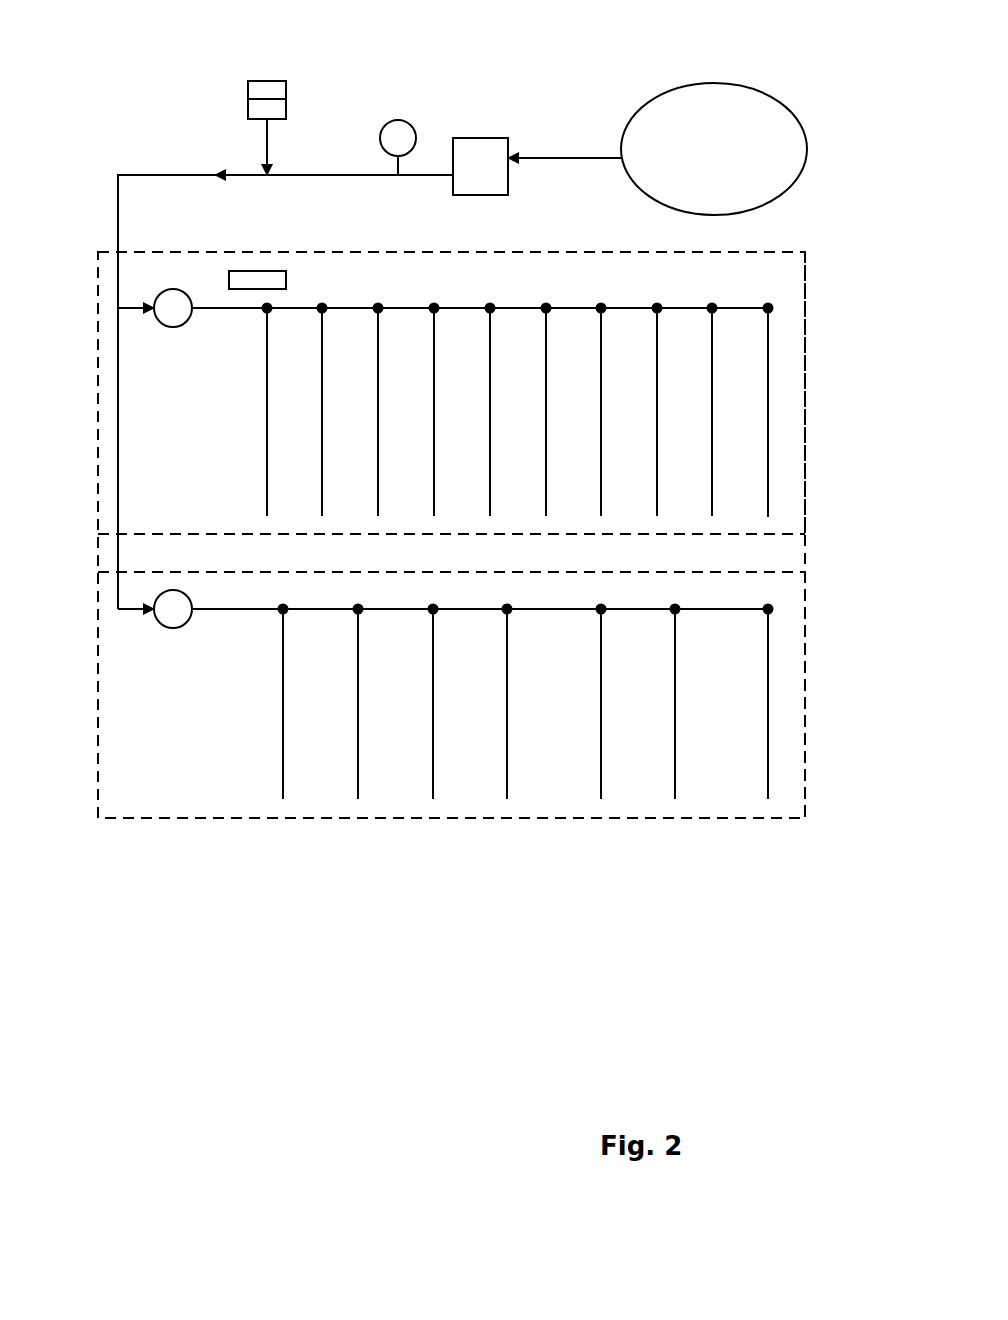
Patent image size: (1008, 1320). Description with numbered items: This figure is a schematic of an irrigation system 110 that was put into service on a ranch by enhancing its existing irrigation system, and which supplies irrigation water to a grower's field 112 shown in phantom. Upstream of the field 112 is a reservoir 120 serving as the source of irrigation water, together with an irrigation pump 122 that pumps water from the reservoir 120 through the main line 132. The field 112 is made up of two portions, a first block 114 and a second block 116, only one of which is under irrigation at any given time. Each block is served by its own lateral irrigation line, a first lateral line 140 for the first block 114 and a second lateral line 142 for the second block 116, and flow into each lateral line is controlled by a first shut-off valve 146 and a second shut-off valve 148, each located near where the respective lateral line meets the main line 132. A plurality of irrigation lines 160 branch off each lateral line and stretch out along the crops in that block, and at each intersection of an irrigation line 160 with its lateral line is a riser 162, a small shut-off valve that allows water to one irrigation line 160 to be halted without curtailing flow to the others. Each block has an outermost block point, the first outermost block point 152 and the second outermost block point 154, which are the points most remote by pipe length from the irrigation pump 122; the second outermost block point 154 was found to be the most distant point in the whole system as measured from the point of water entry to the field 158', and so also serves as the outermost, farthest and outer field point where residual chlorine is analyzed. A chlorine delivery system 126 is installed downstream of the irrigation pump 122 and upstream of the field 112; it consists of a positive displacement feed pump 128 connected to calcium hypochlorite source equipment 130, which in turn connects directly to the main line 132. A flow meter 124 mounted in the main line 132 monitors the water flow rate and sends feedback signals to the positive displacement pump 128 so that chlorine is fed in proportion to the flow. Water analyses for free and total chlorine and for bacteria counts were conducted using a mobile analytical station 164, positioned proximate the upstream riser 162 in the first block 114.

The irrigation system 110 is at (357, 986).
The field 112 is at (805, 611).
The first block 114 is at (805, 443).
The second block 116 is at (805, 743).
The reservoir 120 is at (805, 121).
The irrigation pump 122 is at (473, 138).
The flow meter 124 is at (398, 121).
The chlorine delivery system 126 is at (253, 100).
The positive displacement pump 128 is at (285, 81).
The calcium hypochlorite source equipment 130 is at (248, 119).
The main line 132 is at (323, 175).
The first lateral line 140 is at (620, 309).
The second lateral line 142 is at (638, 609).
The first shut-off valve 146 is at (155, 289).
The second shut-off valve 148 is at (156, 622).
The first outermost block point 152 is at (768, 517).
The second outermost block point 154 is at (768, 799).
The point of water entry to the field 158' is at (79, 205).
The irrigation lines 160 is at (434, 365).
The riser 162 is at (546, 308).
The mobile analytical station 164 is at (247, 271).